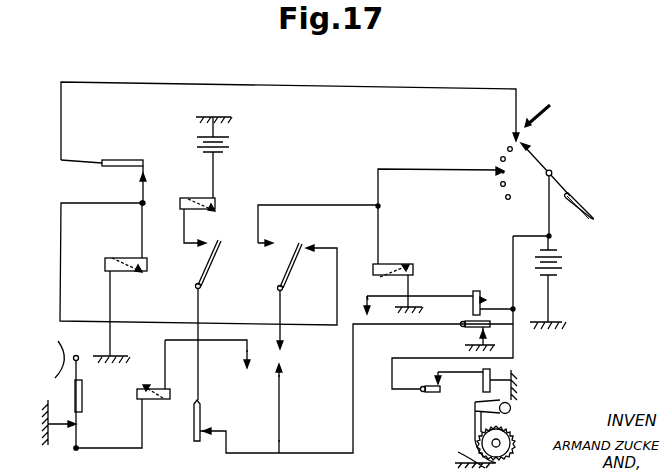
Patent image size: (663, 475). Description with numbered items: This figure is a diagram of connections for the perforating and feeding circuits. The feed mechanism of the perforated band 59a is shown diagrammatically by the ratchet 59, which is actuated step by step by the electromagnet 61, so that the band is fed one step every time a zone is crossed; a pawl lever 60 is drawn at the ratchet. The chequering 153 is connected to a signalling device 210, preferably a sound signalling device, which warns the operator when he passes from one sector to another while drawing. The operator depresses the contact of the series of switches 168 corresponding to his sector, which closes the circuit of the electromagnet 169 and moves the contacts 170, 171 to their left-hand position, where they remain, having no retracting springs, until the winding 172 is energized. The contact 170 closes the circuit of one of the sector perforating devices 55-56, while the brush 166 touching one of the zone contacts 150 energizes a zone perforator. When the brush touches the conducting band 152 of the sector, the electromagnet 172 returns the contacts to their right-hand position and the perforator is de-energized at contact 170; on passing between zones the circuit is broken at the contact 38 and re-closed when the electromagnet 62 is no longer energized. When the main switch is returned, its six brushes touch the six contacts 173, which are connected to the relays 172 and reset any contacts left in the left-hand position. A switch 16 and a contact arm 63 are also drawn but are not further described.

The switches 168 is at (119, 160).
The sector perforating devices 55-56 is at (214, 203).
The contacts 173 is at (498, 174).
The selector switch 16 is at (540, 160).
The electromagnet 169 is at (127, 272).
The contact 170 is at (203, 285).
The contact 171 is at (284, 285).
The zone contacts 150 is at (360, 301).
The winding 172 is at (413, 270).
The electromagnet 62 is at (477, 291).
The contact 38 is at (466, 329).
The chequering 153 is at (248, 354).
The conducting band 152 is at (298, 371).
The brush 166 is at (277, 437).
The signalling device 210 is at (137, 392).
The electromagnet 61 is at (493, 372).
The pawl lever 60 is at (510, 417).
The ratchet 59 is at (512, 447).
The perforated band 59a is at (458, 456).
The contact arm 63 is at (440, 395).